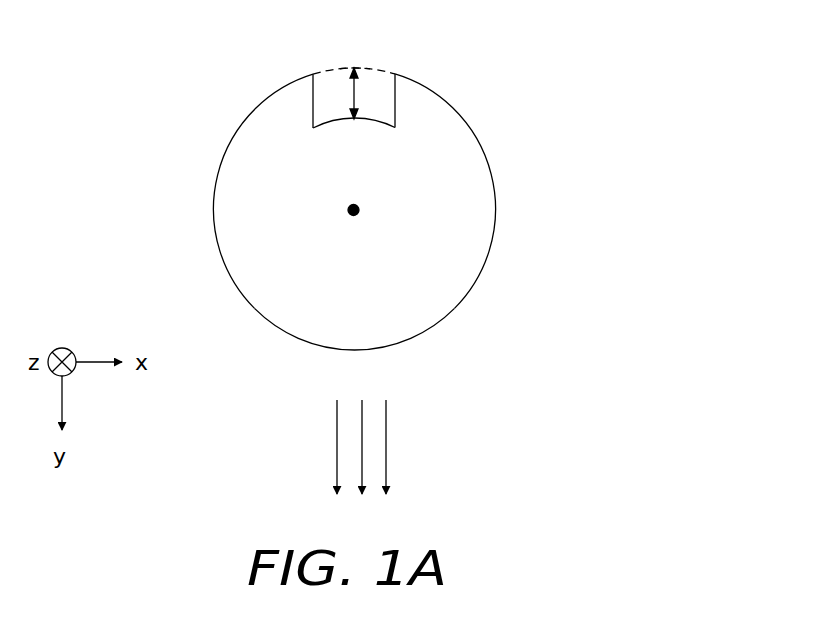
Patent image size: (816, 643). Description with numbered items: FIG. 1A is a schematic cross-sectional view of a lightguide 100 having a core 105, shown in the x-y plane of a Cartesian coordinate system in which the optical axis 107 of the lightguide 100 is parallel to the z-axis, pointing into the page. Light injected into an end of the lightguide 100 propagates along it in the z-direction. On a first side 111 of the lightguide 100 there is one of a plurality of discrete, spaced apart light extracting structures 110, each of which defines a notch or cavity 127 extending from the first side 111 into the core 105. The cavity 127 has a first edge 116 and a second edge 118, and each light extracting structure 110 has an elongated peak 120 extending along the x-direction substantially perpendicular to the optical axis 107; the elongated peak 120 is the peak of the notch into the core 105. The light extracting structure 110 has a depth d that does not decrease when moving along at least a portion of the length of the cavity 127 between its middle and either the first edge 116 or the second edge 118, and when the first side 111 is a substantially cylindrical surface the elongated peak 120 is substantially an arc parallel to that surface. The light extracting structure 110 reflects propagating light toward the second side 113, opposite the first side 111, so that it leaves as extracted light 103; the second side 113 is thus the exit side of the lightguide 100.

The lightguide 100 is at (138, 34).
The extracted light 103 is at (387, 452).
The core 105 is at (386, 235).
The optical axis 107 is at (347, 214).
The light extracting structure 110 is at (380, 83).
The first side 111 is at (295, 80).
The second side 113 is at (391, 349).
The first edge 116 is at (312, 107).
The second edge 118 is at (395, 95).
The elongated peak 120 is at (360, 112).
The cavity 127 is at (325, 111).
The depth d is at (340, 77).